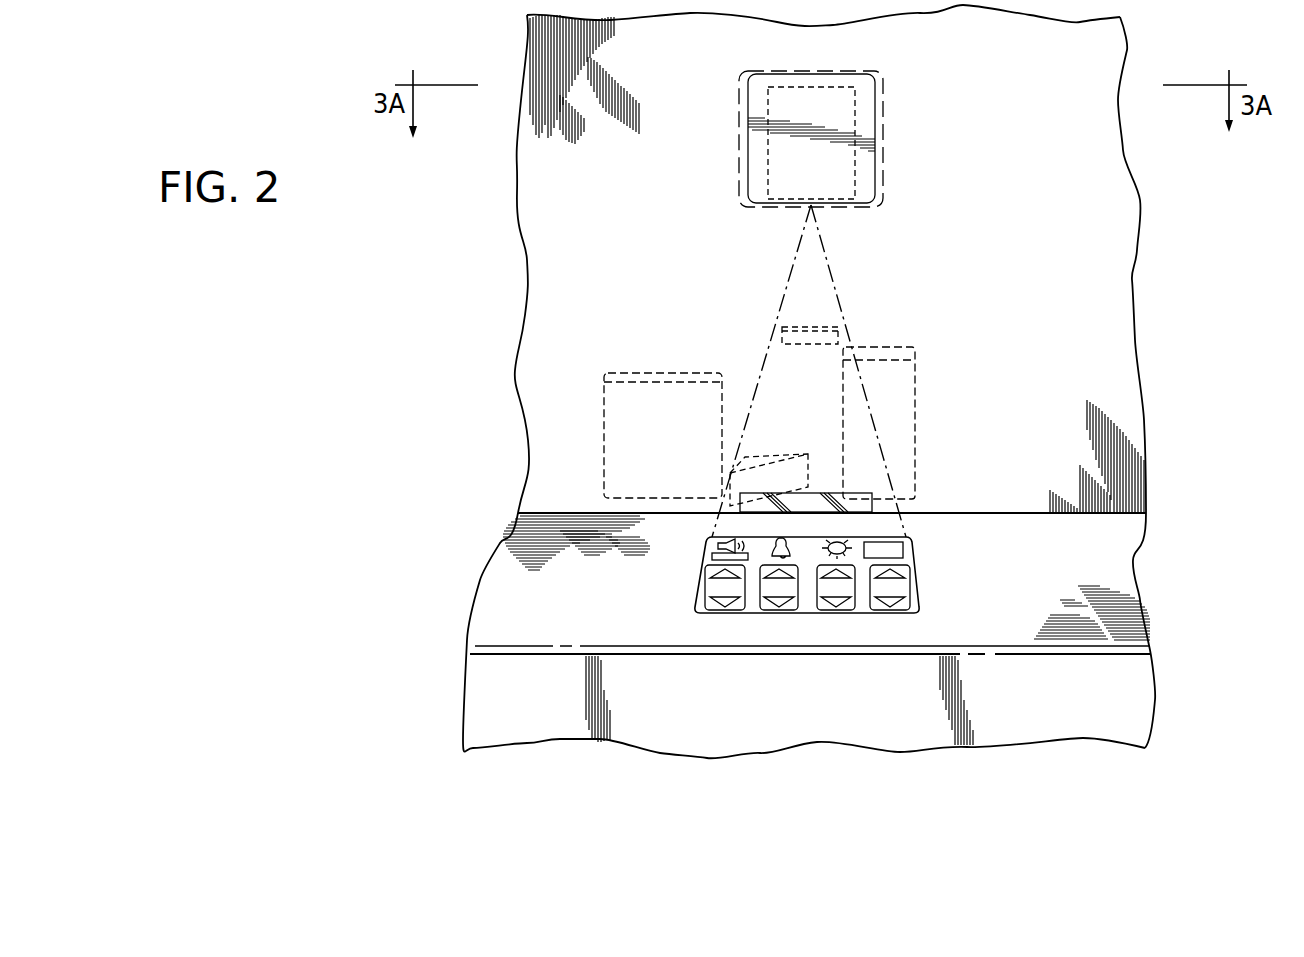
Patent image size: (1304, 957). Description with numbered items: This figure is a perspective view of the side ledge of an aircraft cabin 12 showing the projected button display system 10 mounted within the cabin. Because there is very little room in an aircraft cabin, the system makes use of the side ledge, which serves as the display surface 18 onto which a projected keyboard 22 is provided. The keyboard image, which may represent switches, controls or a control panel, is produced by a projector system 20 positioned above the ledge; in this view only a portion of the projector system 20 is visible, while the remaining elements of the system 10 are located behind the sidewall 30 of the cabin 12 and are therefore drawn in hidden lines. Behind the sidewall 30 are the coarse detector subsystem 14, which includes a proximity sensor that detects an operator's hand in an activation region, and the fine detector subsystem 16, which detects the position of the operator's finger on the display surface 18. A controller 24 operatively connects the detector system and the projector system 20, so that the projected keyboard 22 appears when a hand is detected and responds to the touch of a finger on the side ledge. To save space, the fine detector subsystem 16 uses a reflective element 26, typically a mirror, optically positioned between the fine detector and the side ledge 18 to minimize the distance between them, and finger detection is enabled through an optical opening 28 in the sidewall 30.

The projected button display system 10 is at (806, 381).
The aircraft cabin 12 is at (500, 287).
The coarse detector subsystem 14 is at (813, 327).
The fine detector subsystem 16 is at (916, 380).
The display surface 18 is at (1105, 558).
The projector system 20 is at (894, 150).
The projected keyboard 22 is at (925, 561).
The controller 24 is at (603, 425).
The reflective element 26 is at (765, 457).
The optical opening 28 is at (853, 507).
The sidewall 30 is at (1138, 248).